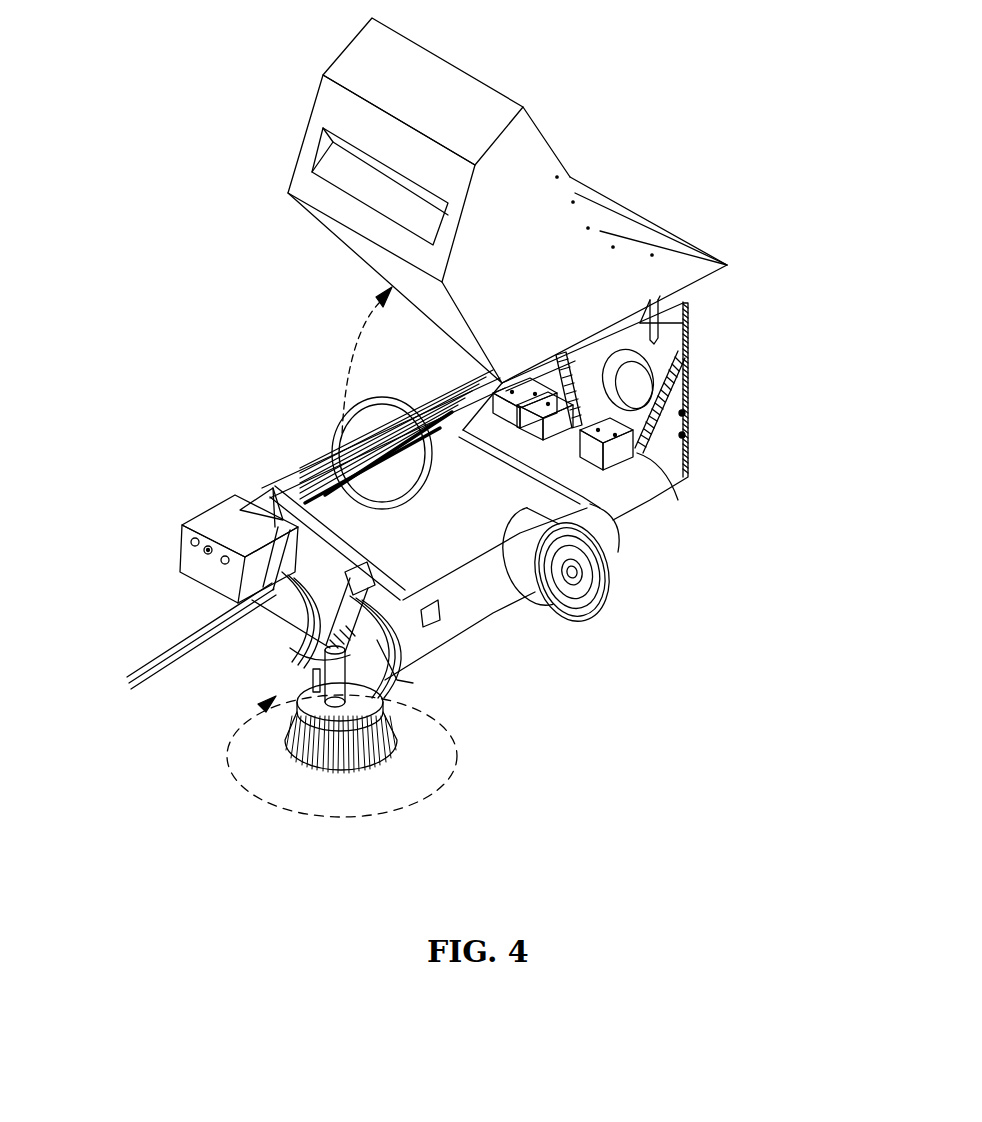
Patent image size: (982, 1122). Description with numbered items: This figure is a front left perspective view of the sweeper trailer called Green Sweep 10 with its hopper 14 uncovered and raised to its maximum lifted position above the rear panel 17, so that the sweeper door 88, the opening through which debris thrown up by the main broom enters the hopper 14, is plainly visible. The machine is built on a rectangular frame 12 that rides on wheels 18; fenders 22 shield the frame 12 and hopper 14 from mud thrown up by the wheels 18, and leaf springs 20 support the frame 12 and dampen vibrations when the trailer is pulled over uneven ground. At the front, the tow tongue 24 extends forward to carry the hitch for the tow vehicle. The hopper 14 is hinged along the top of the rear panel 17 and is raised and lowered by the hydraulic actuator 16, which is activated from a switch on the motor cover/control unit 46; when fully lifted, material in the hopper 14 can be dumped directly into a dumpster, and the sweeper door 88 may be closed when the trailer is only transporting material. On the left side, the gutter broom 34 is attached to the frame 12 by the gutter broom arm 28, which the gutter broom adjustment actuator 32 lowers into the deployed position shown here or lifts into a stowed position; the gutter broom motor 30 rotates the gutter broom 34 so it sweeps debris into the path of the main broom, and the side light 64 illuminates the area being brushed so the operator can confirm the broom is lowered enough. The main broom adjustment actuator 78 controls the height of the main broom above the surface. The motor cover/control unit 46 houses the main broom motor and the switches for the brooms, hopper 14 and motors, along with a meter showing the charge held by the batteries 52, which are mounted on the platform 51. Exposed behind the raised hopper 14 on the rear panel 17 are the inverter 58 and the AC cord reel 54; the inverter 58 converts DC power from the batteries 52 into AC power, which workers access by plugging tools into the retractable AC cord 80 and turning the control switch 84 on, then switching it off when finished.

The Green Sweep 10 is at (224, 80).
The rectangular frame 12 is at (317, 463).
The hopper 14 is at (327, 238).
The hydraulic actuator 16 is at (594, 352).
The rear panel 17 is at (664, 347).
The wheels 18 is at (555, 603).
The leaf springs 20 is at (433, 455).
The fenders 22 is at (378, 403).
The tow tongue 24 is at (198, 633).
The gutter broom arm 28 is at (430, 652).
The gutter broom motor 30 is at (323, 682).
The gutter broom adjustment actuator 32 is at (376, 566).
The gutter broom 34 is at (350, 765).
The motor cover/control unit 46 is at (198, 573).
The platform 51 is at (570, 468).
The batteries 52 is at (640, 452).
The AC cord reel 54 is at (672, 342).
The inverter 58 is at (688, 345).
The side light 64 is at (440, 615).
The main broom adjustment actuator 78 is at (262, 532).
The retractable AC cord 80 is at (683, 436).
The control switch 84 is at (683, 412).
The sweeper door 88 is at (318, 152).